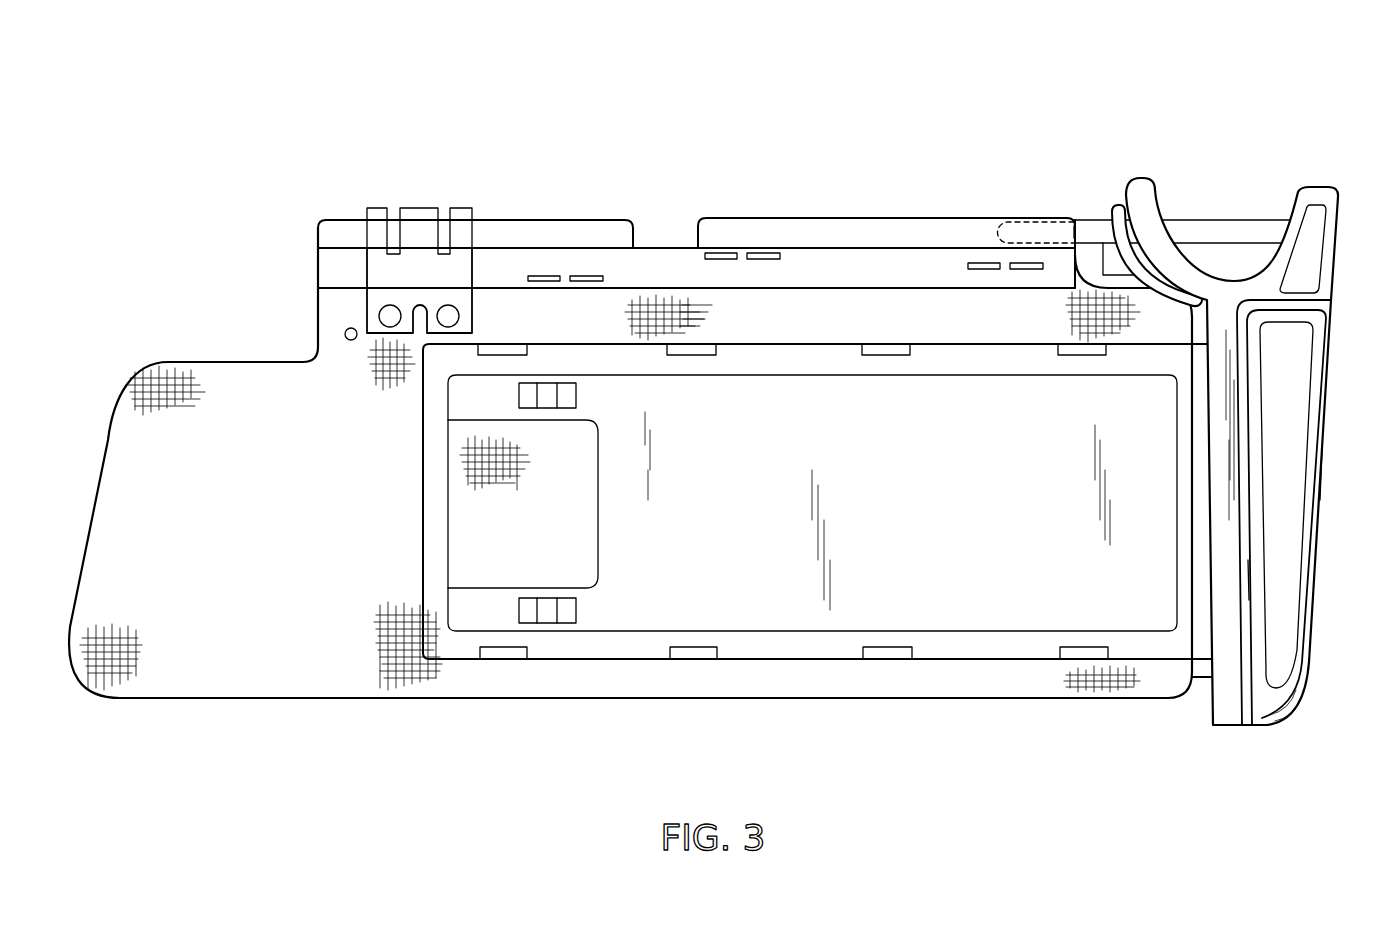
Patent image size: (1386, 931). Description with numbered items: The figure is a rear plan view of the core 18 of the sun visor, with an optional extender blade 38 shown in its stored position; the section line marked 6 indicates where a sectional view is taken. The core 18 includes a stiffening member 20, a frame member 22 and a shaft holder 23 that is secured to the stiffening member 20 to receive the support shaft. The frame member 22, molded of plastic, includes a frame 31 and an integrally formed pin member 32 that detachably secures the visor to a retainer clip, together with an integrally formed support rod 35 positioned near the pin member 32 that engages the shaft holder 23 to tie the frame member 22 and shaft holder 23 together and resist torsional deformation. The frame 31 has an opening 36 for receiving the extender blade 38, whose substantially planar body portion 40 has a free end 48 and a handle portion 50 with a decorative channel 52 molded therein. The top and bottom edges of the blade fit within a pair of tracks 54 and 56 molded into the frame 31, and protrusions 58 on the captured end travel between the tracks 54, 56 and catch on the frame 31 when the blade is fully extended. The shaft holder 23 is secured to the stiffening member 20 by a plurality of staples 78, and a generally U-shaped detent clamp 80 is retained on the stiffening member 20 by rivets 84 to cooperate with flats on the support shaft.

The core 18 is at (922, 128).
The stiffening member 20 is at (213, 352).
The frame member 22 is at (597, 676).
The shaft holder 23 is at (527, 212).
The frame 31 is at (433, 523).
The pin member 32 is at (1222, 228).
The support rod 35 is at (1096, 228).
The opening 36 is at (1243, 582).
The extender blade 38 is at (1344, 371).
The body portion 40 is at (908, 582).
The free end 48 is at (1322, 498).
The handle portion 50 is at (1280, 738).
The decorative channel 52 is at (1272, 398).
The track 54 is at (838, 352).
The track 56 is at (790, 681).
The protrusion 58 is at (547, 400).
The staples 78 is at (545, 274).
The detent clamp 80 is at (416, 212).
The rivets 84 is at (390, 316).
The section line 6- 6 is at (345, 728).